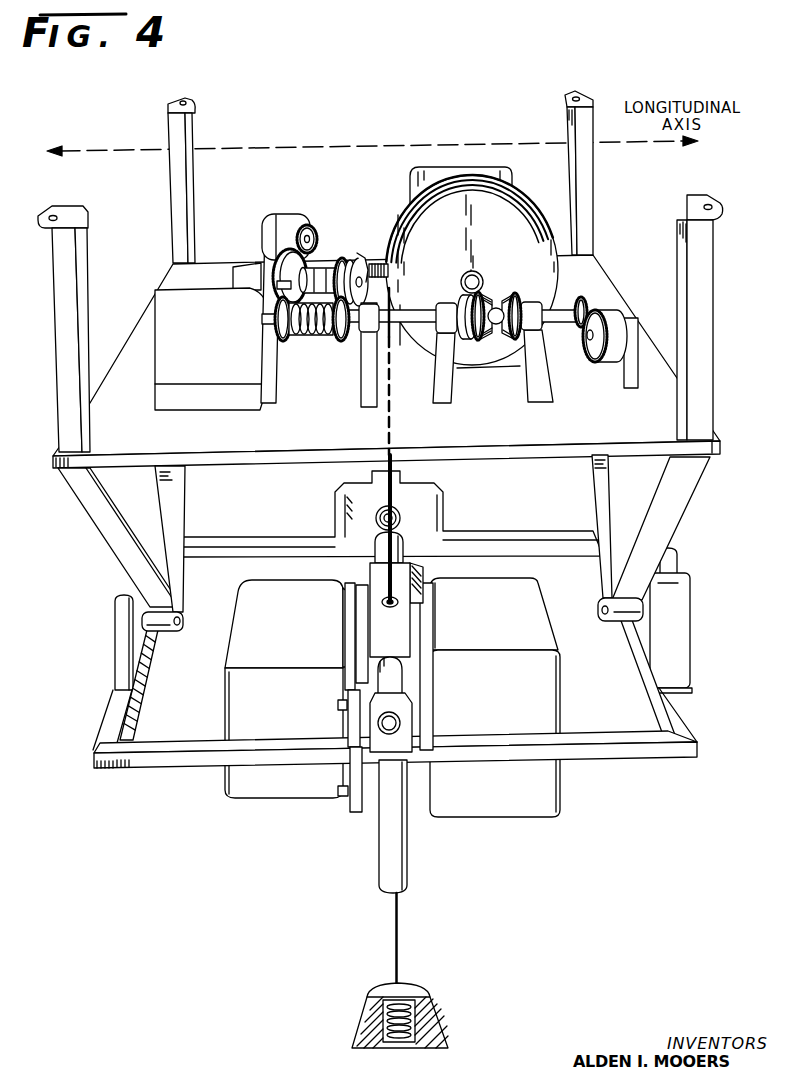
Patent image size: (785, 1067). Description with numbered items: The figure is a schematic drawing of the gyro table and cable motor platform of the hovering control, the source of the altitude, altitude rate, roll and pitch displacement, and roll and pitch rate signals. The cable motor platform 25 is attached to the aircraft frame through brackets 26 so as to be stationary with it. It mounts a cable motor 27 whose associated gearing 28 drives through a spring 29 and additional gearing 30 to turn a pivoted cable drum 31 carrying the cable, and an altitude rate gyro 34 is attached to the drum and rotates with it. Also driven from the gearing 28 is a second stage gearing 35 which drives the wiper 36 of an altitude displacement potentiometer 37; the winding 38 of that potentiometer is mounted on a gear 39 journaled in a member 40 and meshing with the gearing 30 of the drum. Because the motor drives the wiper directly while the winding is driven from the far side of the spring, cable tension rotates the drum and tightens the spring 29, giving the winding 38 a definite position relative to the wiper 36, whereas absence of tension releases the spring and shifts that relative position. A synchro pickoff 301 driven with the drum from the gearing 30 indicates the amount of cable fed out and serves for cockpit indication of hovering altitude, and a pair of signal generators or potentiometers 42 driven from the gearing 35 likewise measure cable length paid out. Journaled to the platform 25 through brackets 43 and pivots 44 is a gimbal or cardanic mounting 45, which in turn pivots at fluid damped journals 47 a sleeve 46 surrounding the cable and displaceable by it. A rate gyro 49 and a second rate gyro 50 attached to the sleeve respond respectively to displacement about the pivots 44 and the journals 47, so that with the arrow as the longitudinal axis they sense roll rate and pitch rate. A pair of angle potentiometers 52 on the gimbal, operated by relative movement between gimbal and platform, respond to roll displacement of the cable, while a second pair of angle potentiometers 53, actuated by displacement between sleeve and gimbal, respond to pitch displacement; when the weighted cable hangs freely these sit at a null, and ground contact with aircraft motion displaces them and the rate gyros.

The cable motor platform 25 is at (611, 290).
The brackets 26 is at (712, 322).
The cable motor 27 is at (215, 348).
The gearing 28 is at (283, 342).
The spring 29 is at (311, 335).
The gearing 30 is at (342, 342).
The cable drum 31 is at (497, 247).
The altitude rate gyro 34 is at (516, 192).
The second stage gearing 35 is at (312, 263).
The wiper 36 is at (366, 262).
The altitude displacement potentiometer 37 is at (362, 238).
The winding 38 is at (347, 258).
The gear 39 is at (346, 262).
The member 40 is at (328, 278).
The signal generators or potentiometers 42 is at (272, 216).
The brackets 43 is at (158, 498).
The pivots 44 is at (178, 617).
The gimbal or cardanic mounting 45 is at (612, 734).
The platform or sleeve 46 is at (392, 665).
The fluid damped journals 47 is at (376, 520).
The rate gyro 49 is at (297, 723).
The second rate gyro 50 is at (508, 721).
The angle potentiometers 52 is at (689, 613).
The second pair of angle potentiometers 53 is at (432, 511).
The synchro pickoff 301 is at (624, 330).